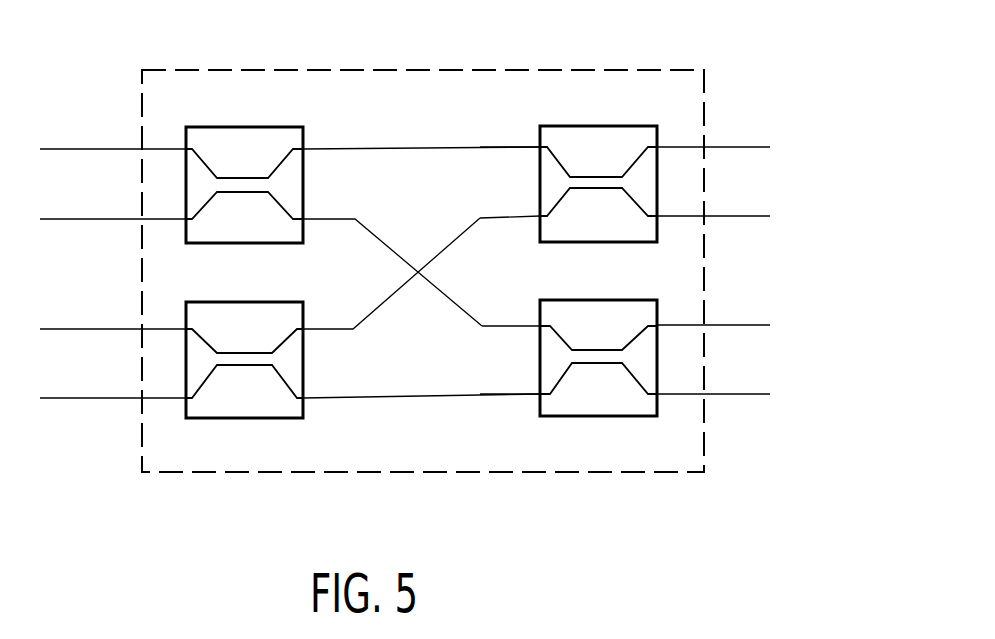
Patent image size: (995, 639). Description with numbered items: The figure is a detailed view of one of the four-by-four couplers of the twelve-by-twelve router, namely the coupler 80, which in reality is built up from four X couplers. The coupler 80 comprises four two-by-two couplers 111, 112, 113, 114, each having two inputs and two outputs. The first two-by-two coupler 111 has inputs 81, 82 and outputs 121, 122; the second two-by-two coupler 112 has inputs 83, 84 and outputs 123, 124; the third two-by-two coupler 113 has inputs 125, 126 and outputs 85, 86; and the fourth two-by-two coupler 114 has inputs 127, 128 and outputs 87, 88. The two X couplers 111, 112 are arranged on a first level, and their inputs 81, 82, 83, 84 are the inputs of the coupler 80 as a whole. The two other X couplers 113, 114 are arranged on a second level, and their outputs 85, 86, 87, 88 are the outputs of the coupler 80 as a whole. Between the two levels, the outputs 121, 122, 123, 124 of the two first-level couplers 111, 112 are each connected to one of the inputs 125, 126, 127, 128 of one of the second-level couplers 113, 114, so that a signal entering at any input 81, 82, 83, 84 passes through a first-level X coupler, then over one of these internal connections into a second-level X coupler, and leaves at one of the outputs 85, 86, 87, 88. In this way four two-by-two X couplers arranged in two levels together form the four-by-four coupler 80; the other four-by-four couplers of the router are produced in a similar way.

The coupler 80 is at (611, 70).
The input 81 is at (80, 149).
The input 82 is at (80, 219).
The input 83 is at (80, 329).
The input 84 is at (80, 398).
The output 85 is at (730, 147).
The output 86 is at (730, 216).
The output 87 is at (727, 325).
The output 88 is at (727, 394).
The 2x2 coupler 111 is at (237, 127).
The 2x2 coupler 112 is at (236, 302).
The 2x2 coupler 113 is at (595, 126).
The 2x2 coupler 114 is at (595, 300).
The output 121 is at (318, 146).
The output 122 is at (315, 216).
The output 123 is at (320, 326).
The output 124 is at (320, 396).
The input 125 is at (524, 146).
The input 126 is at (524, 216).
The input 127 is at (523, 323).
The input 128 is at (522, 392).